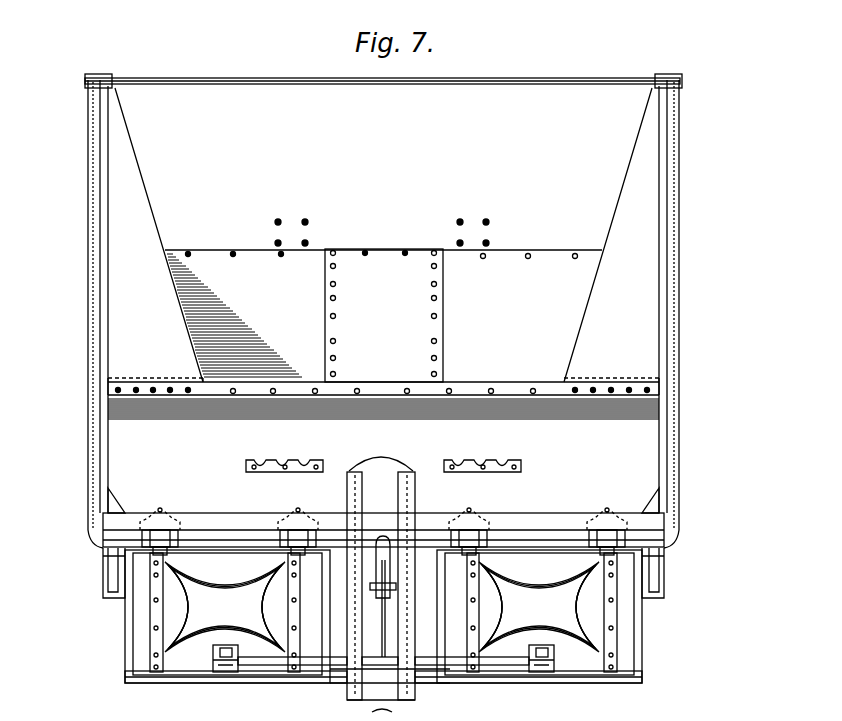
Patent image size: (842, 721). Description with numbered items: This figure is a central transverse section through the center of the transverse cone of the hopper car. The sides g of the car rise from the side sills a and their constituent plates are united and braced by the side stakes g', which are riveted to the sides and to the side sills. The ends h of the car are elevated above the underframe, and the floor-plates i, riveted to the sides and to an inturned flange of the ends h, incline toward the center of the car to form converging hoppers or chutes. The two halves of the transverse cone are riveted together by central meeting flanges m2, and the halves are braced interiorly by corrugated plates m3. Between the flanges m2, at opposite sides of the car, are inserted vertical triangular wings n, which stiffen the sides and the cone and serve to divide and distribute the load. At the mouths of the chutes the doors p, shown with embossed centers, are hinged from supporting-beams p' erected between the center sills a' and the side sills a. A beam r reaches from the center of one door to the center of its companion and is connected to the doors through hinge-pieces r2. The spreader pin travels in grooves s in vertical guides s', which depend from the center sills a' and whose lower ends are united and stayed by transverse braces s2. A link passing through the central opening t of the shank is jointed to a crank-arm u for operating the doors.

The ends h is at (383, 293).
The sides g is at (383, 314).
The side stakes g' is at (384, 458).
The vertical triangular wings n is at (383, 236).
The floor-plates i is at (383, 315).
The central meeting flanges m2 is at (477, 390).
The corrugated plates m3 is at (285, 462).
The supporting-beams p' is at (383, 514).
The doors p is at (383, 616).
The center sills a' is at (383, 556).
The side sills a is at (379, 581).
The vertical guides s' is at (381, 457).
The grooves s is at (381, 586).
The crank-arm u is at (383, 540).
The central opening t is at (400, 608).
The beam r is at (455, 668).
The hinge-pieces r2 is at (214, 656).
The transverse braces s2 is at (365, 684).